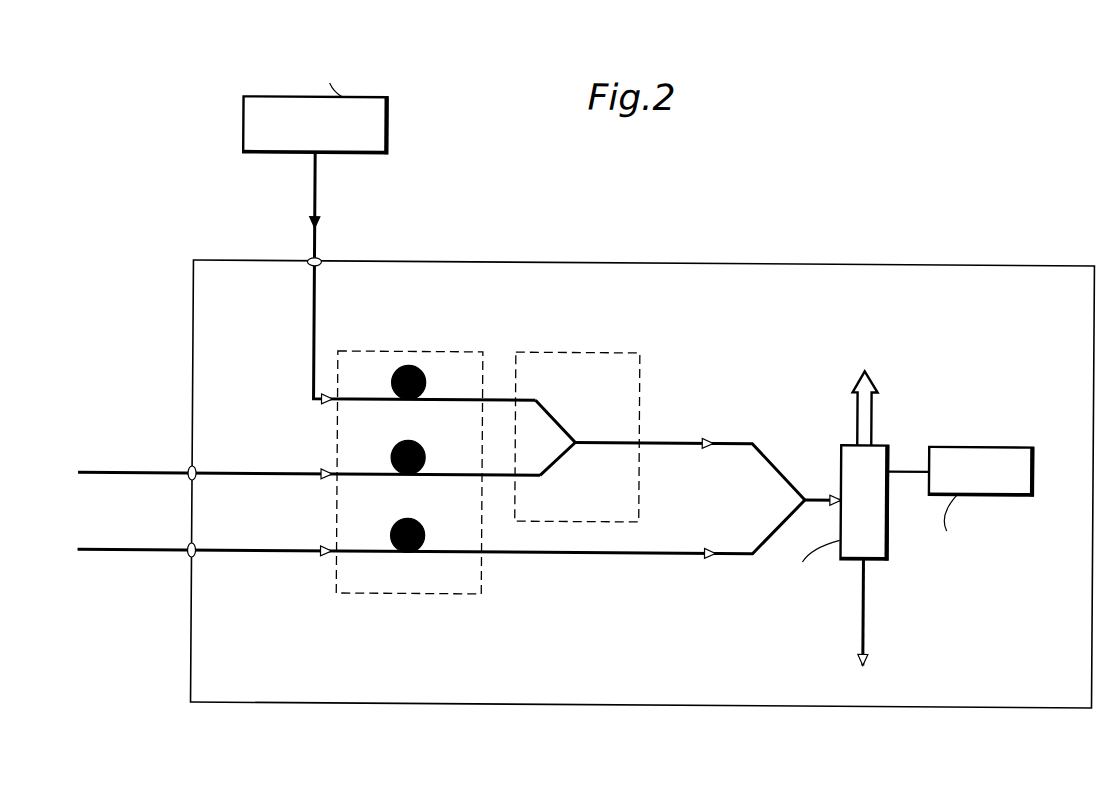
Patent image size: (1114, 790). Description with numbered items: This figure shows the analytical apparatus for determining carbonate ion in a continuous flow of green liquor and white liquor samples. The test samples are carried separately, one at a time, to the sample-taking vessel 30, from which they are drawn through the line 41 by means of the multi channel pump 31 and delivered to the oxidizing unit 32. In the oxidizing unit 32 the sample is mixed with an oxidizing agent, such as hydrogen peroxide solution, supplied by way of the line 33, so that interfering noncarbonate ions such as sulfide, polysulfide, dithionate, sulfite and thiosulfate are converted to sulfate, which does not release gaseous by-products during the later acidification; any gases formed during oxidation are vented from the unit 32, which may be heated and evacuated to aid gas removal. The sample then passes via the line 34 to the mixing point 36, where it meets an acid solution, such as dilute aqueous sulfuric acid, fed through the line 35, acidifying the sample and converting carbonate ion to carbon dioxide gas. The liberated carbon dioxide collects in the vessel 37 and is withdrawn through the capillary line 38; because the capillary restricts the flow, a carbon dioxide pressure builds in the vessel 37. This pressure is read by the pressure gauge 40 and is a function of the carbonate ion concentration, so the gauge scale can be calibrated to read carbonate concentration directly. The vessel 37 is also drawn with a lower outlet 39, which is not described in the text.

The sample-taking vessel 30 is at (377, 130).
The multi channel pump 31 is at (410, 350).
The oxidizing unit 32 is at (613, 350).
The line 33 is at (99, 473).
The line 34 is at (728, 438).
The line 35 is at (99, 550).
The mixing point 36 is at (805, 498).
The vessel 37 is at (883, 449).
The capillary line 38 is at (877, 377).
The drain outlet 39 is at (868, 652).
The pressure gauge 40 is at (993, 448).
The line 41 is at (314, 250).